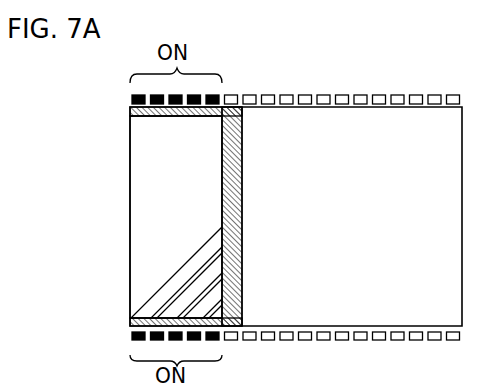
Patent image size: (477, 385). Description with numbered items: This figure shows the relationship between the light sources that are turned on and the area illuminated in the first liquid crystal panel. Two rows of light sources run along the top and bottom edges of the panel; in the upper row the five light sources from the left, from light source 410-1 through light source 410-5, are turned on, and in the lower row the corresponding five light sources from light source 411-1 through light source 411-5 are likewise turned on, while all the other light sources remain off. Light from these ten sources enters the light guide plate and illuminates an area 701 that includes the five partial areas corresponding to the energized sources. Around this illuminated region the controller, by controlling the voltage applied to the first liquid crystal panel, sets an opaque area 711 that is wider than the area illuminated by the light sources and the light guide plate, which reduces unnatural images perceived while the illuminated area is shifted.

The light source 410-1 is at (136, 96).
The light source 410-5 is at (218, 95).
The light source 411-1 is at (138, 341).
The light source 411-5 is at (213, 341).
The illuminated area 701 is at (142, 277).
The opaque area 711 is at (243, 292).